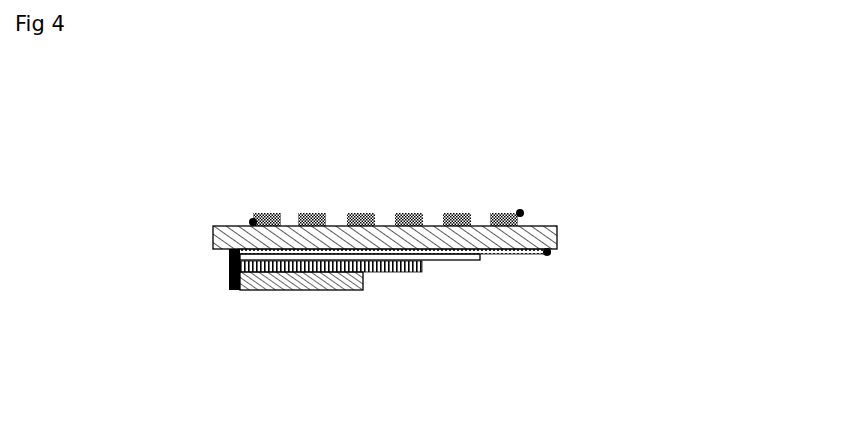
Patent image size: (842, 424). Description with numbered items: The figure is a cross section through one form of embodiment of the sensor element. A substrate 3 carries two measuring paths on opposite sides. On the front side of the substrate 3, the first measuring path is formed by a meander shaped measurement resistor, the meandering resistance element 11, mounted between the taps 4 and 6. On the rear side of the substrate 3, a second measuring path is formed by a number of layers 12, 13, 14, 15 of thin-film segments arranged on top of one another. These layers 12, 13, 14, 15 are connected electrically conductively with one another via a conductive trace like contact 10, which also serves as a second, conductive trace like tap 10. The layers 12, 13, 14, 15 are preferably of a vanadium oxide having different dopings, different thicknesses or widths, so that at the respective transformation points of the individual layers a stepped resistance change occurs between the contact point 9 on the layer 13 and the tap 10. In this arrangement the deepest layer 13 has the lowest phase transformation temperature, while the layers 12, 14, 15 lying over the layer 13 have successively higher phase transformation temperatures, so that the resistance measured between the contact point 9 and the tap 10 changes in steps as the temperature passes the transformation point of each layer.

The substrate 3 is at (213, 249).
The tap 4 is at (520, 213).
The tap 6 is at (253, 222).
The contact point 9 is at (547, 252).
The conductive trace like contact 10 is at (232, 282).
The meandering resistance element 11 is at (424, 126).
The layer 12 is at (455, 263).
The layer 13 is at (524, 256).
The layer 14 is at (385, 276).
The layer 15 is at (313, 291).